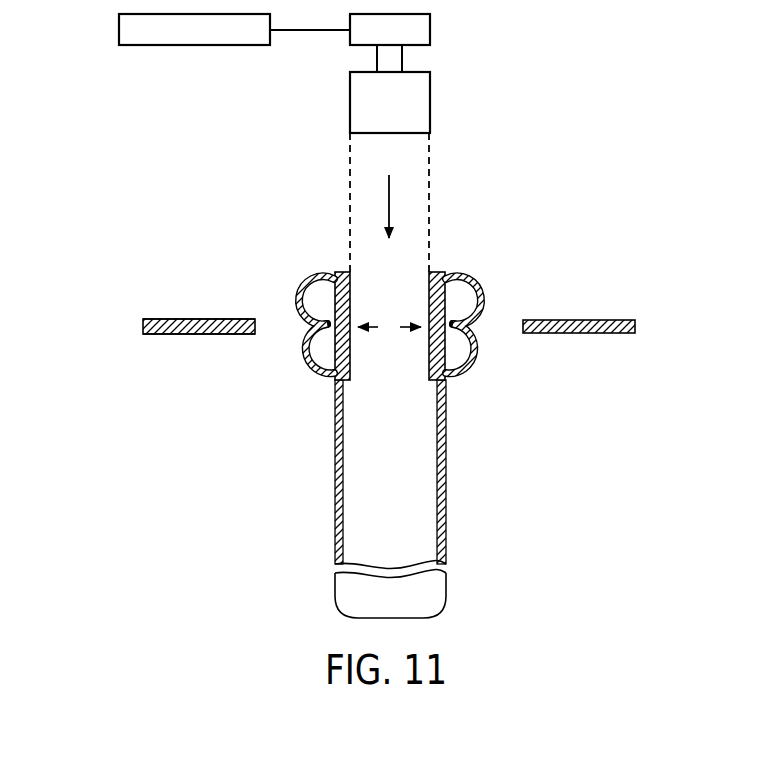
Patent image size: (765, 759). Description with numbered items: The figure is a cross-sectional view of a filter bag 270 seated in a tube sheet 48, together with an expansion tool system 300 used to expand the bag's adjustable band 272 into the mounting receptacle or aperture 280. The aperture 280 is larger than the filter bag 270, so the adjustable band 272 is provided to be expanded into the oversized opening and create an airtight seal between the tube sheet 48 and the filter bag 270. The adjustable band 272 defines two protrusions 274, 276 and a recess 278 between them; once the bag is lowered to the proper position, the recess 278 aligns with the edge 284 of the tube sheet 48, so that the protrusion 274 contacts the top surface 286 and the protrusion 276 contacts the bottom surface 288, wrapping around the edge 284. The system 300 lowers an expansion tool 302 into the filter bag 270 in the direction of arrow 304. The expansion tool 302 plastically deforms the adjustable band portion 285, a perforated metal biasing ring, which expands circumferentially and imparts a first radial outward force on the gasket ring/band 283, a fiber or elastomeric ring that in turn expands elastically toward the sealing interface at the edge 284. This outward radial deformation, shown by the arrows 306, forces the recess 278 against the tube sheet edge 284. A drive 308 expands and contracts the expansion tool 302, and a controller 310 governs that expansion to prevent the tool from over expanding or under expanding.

The tube sheet 48 is at (171, 327).
The filter bag 270 is at (432, 489).
The adjustable band 272 is at (279, 315).
The protrusion 274 is at (473, 282).
The protrusion 276 is at (478, 371).
The recess 278 is at (503, 326).
The mounting receptacle or aperture 280 is at (271, 363).
The gasket ring/band 283 is at (302, 389).
The edge 284 is at (195, 327).
The adjustable band portion 285 is at (340, 271).
The top surface 286 is at (155, 318).
The bottom surface 288 is at (153, 336).
The expansion tool system 300 is at (311, 140).
The expansion tool 302 is at (430, 103).
The arrow 304 is at (389, 200).
The arrows 306 is at (378, 329).
The drive 308 is at (430, 26).
The controller 310 is at (118, 30).